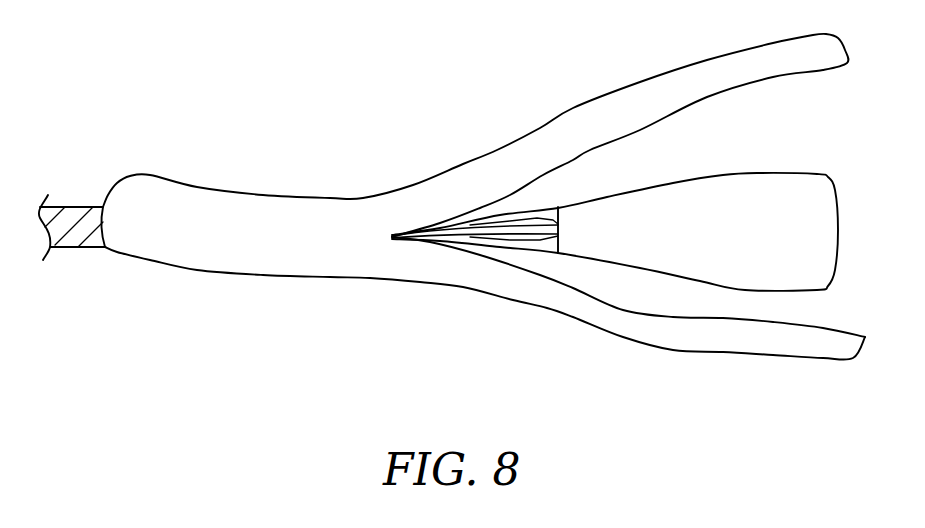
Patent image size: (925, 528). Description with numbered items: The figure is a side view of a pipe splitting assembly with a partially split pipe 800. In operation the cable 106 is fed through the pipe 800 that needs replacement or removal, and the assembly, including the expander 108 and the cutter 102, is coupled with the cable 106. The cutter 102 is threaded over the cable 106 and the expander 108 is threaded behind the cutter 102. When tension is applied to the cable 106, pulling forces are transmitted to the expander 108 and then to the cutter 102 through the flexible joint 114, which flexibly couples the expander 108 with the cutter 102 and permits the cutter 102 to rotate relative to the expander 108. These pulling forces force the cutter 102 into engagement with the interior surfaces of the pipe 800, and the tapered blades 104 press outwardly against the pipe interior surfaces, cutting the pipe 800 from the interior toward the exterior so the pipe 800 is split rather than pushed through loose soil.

The pipe 800 is at (484, 197).
The cable 106 is at (73, 240).
The cutter 102 is at (556, 253).
The blades 104 is at (483, 223).
The expander 108 is at (803, 174).
The flexible joint 114 is at (558, 207).